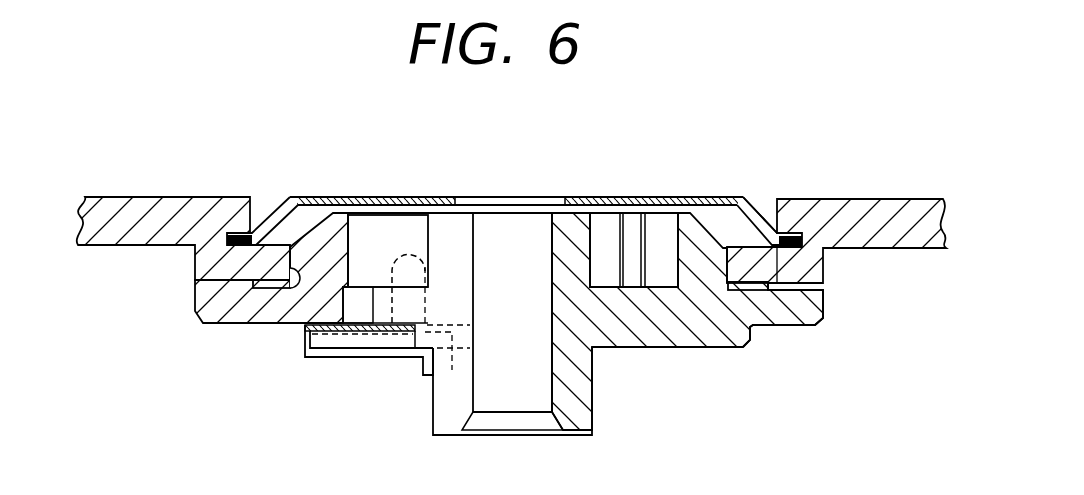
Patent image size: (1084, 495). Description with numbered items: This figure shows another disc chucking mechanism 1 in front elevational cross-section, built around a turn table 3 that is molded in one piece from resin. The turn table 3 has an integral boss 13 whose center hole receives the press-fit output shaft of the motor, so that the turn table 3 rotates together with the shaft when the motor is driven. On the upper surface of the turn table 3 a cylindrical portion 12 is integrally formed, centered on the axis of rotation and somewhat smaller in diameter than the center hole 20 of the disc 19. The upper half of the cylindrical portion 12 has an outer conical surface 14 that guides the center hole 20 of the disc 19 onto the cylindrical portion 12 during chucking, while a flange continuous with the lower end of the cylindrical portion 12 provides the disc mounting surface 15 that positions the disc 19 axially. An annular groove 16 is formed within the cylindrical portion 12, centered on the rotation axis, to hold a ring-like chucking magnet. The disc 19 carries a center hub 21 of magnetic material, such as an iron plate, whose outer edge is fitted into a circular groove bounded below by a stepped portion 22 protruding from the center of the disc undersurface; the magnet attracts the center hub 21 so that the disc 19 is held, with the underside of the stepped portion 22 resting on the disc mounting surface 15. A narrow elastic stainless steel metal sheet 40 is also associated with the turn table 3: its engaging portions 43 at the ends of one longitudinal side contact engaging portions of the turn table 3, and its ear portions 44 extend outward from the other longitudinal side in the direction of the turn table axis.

The disc chucking mechanism 1 is at (845, 198).
The turn table 3 is at (790, 315).
The cylindrical portion 12 is at (742, 212).
The boss 13 is at (585, 397).
The conical surface 14 is at (708, 233).
The disc mounting surface 15 is at (800, 268).
The annular groove 16 is at (660, 216).
The disc 19 is at (920, 205).
The center hole 20 is at (300, 287).
The center hub 21 is at (433, 197).
The stepped portion 22 is at (195, 265).
The metal sheet 40 is at (320, 358).
The engaging portions 43 is at (418, 368).
The ear portions 44 is at (402, 256).